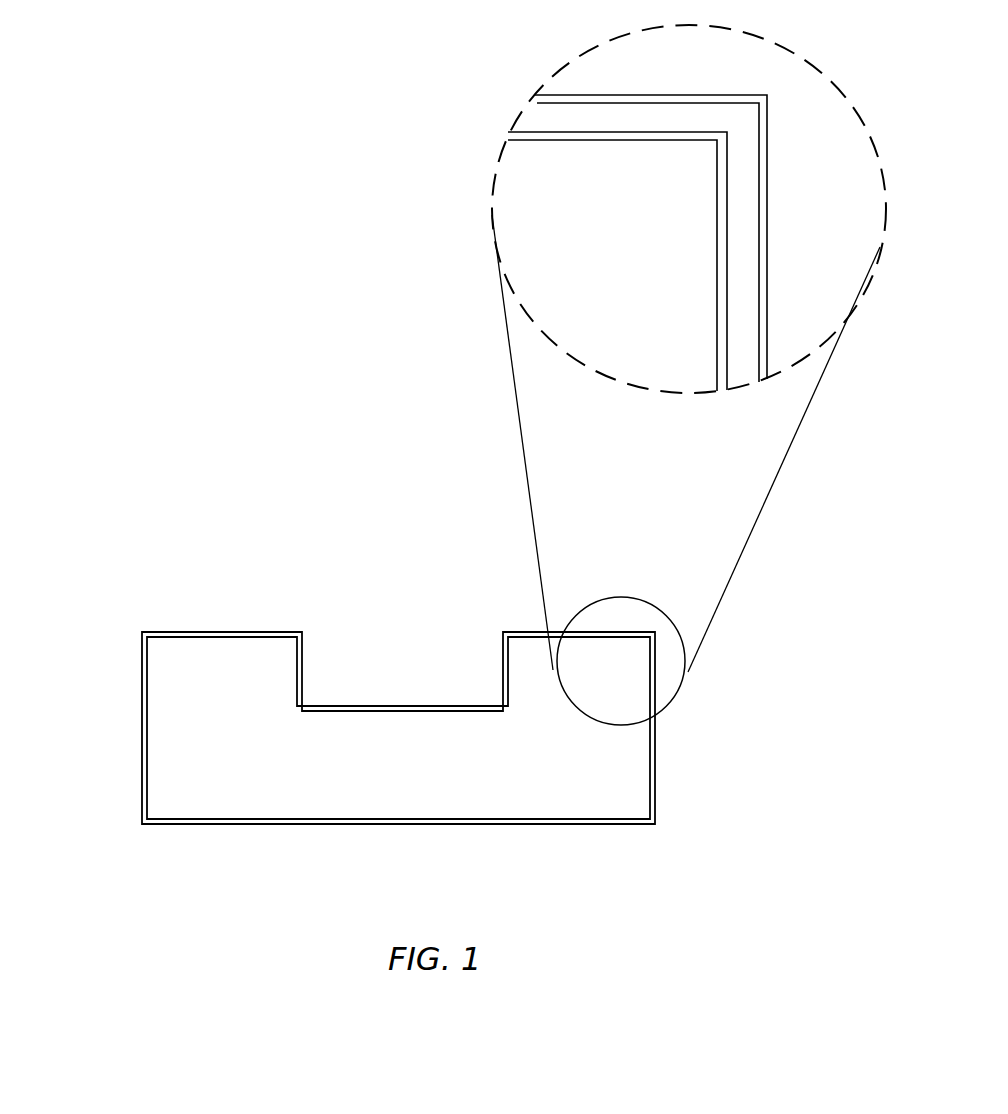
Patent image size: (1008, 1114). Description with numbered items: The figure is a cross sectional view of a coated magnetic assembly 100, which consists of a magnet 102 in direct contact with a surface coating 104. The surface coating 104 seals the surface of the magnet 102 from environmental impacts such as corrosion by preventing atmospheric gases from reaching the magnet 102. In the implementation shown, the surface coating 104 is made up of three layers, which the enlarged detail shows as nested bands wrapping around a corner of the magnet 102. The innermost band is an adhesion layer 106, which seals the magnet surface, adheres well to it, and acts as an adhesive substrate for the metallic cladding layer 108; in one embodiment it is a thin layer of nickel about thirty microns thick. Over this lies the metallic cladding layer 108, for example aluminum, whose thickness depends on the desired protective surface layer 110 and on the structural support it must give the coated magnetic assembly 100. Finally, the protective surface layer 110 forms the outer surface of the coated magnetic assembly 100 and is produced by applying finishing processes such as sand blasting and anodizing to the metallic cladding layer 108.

The coated magnetic assembly 100 is at (140, 612).
The magnet 102 is at (263, 776).
The surface coating 104 is at (130, 759).
The adhesion layer 106 is at (512, 135).
The metallic cladding layer 108 is at (517, 117).
The protective surface layer 110 is at (532, 100).